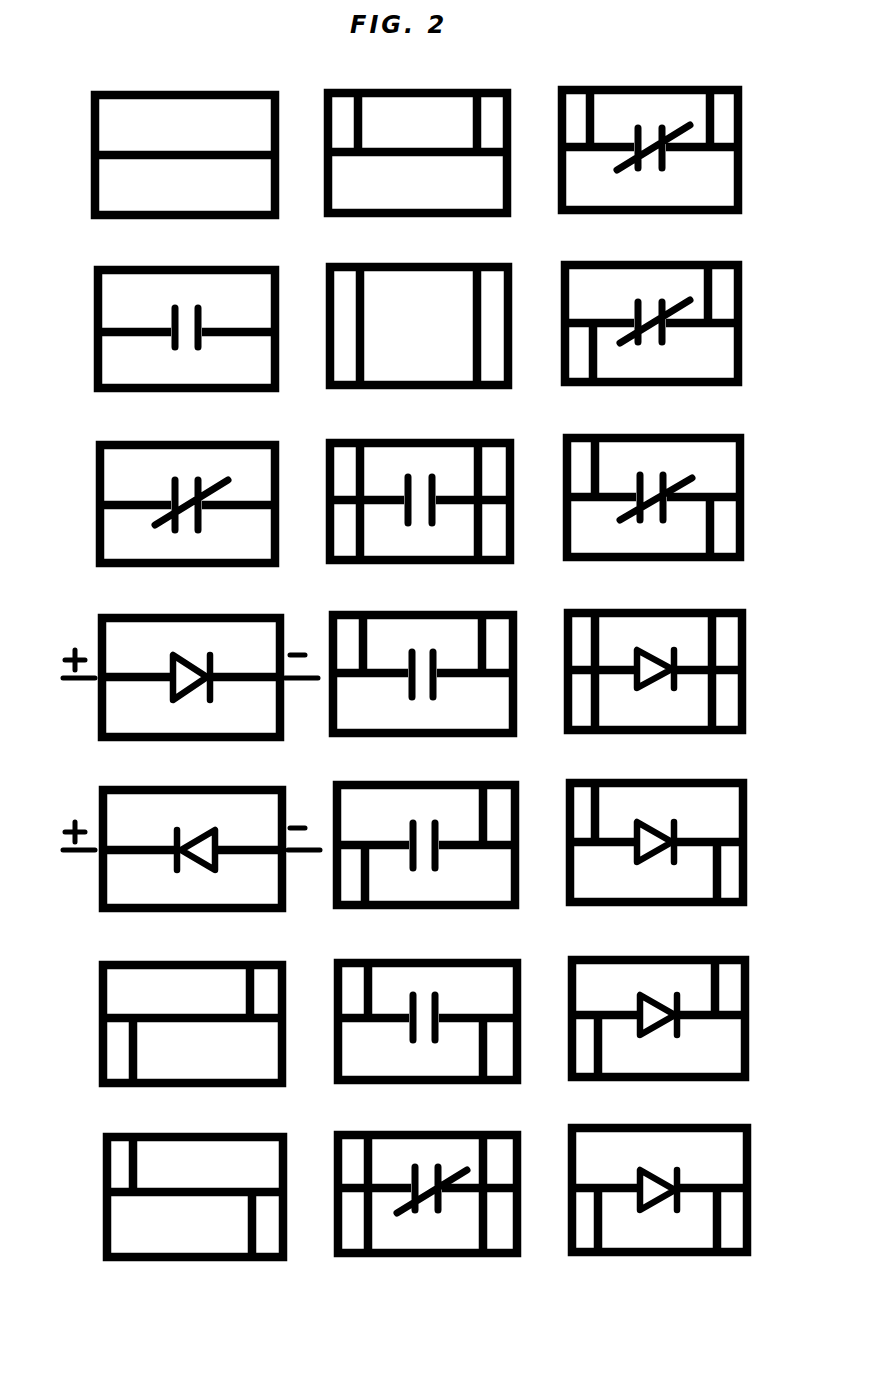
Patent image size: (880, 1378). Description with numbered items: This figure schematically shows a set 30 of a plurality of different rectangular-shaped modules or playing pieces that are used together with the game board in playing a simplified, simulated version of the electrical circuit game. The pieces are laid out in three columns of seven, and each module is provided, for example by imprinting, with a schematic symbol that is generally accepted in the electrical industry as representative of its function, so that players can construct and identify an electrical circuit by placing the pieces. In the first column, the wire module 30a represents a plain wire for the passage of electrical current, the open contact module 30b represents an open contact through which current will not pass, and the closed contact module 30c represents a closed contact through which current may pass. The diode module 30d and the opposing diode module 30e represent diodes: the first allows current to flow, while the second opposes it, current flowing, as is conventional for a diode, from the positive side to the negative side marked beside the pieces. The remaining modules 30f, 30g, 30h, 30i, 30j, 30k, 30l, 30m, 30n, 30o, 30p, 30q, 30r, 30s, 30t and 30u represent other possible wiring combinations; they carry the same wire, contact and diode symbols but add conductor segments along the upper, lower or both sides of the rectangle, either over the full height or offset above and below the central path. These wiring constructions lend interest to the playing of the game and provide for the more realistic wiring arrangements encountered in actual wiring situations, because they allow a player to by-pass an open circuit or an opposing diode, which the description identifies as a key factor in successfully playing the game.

The set of modules or playing pieces 30 is at (756, 61).
The wire module 30a is at (228, 193).
The open contact module 30b is at (240, 367).
The closed contact module 30c is at (238, 542).
The diode module 30d is at (240, 714).
The opposing diode module 30e is at (238, 884).
The wiring combination module 30f is at (245, 1060).
The wiring combination module 30g is at (230, 1235).
The wiring combination module 30h is at (460, 192).
The wiring combination module 30i is at (460, 362).
The wiring combination module 30j is at (455, 538).
The wiring combination module 30k is at (465, 710).
The wiring combination module 30l is at (465, 882).
The wiring combination module 30m is at (492, 1058).
The wiring combination module 30n is at (468, 1232).
The wiring combination module 30o is at (695, 190).
The wiring combination module 30p is at (700, 360).
The wiring combination module 30q is at (692, 537).
The wiring combination module 30r is at (692, 708).
The wiring combination module 30s is at (695, 880).
The wiring combination module 30t is at (702, 1052).
The wiring combination module 30u is at (700, 1228).